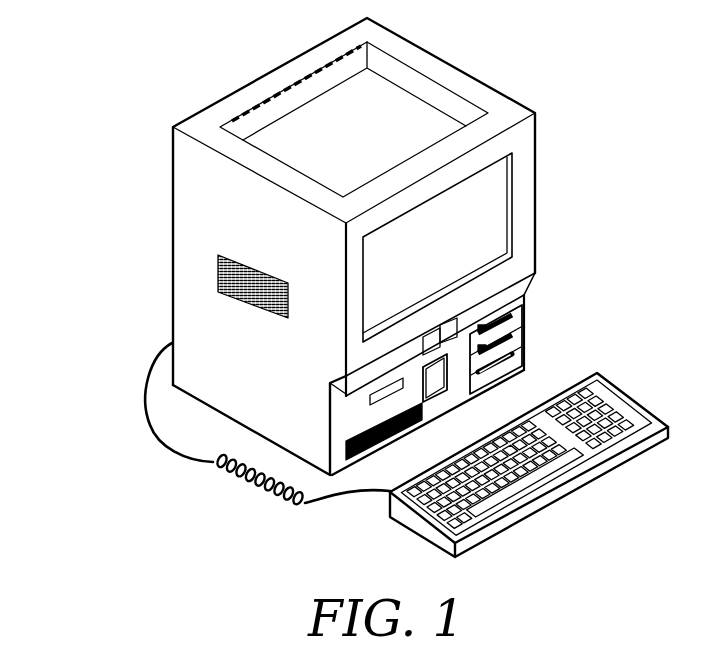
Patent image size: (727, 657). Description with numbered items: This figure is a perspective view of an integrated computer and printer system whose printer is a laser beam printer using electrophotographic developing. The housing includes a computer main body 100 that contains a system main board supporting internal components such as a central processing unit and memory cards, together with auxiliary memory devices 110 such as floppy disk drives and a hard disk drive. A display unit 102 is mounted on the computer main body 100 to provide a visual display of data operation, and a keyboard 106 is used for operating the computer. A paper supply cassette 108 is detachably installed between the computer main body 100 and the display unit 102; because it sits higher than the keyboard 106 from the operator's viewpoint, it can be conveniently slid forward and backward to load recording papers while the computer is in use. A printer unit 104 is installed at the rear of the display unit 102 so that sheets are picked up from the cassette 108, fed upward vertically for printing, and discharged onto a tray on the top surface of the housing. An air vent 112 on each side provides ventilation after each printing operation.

The computer main body 100 is at (334, 423).
The display unit 102 is at (492, 218).
The printer unit 104 is at (366, 62).
The keyboard 106 is at (575, 481).
The paper supply cassette 108 is at (520, 291).
The auxiliary memory devices 110 is at (520, 352).
The air vent 112 is at (182, 191).